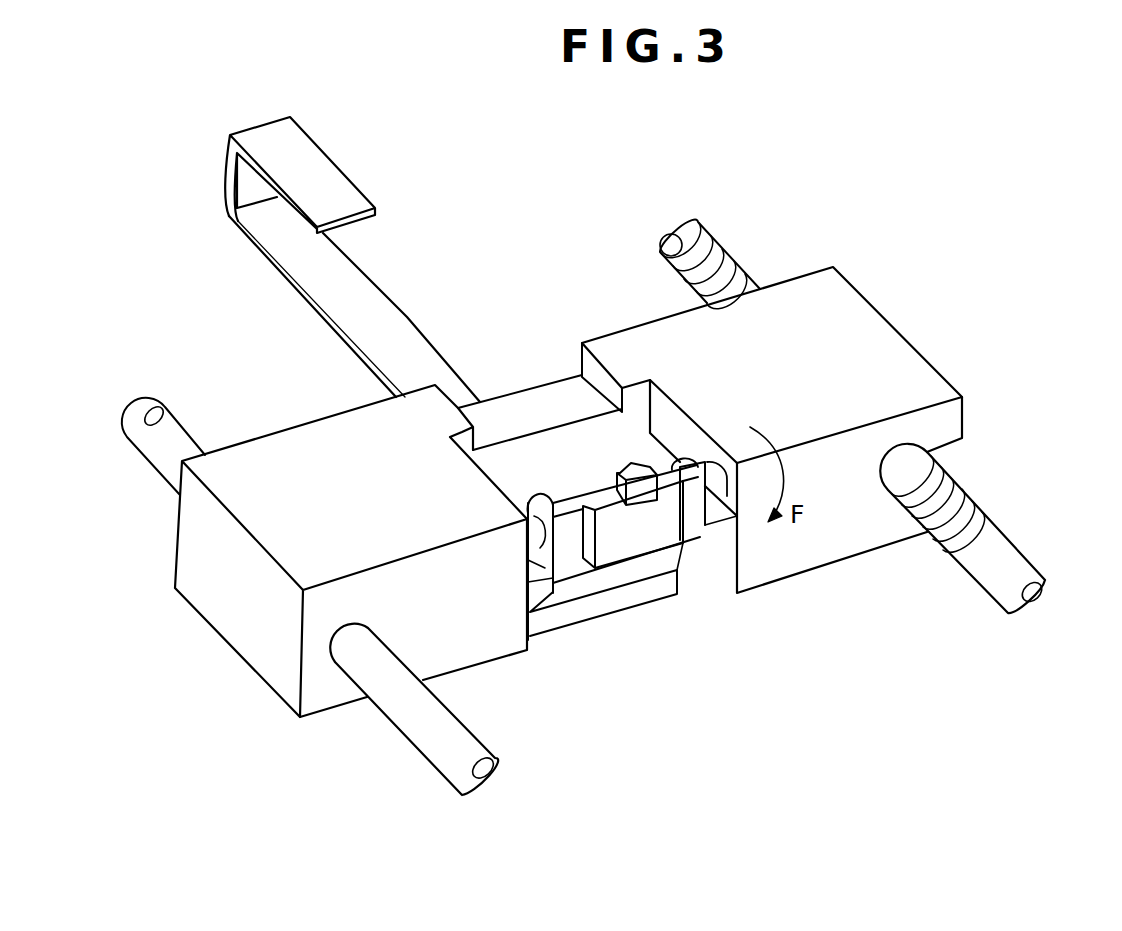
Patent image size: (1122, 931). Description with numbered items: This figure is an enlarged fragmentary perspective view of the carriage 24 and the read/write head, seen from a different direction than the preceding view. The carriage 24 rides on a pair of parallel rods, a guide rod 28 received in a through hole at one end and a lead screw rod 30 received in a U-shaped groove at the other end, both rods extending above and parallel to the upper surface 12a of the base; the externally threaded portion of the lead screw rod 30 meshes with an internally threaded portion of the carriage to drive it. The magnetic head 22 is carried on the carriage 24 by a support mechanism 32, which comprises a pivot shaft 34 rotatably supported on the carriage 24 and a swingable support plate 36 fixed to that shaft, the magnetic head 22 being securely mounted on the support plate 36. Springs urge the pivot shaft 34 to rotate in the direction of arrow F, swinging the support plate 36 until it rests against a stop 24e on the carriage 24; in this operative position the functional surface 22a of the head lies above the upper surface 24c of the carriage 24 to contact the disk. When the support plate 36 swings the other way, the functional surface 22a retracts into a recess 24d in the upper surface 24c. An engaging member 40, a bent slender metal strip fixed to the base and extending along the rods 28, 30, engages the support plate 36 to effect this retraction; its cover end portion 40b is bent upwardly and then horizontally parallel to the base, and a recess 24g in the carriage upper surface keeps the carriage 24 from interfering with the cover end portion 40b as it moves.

The upper surface of the base 12a is at (700, 563).
The magnetic head 22 is at (602, 550).
The functional surface 22a is at (622, 470).
The carriage 24 is at (497, 656).
The upper surface of the carriage 24c is at (885, 378).
The recess 24d is at (567, 478).
The stop 24e is at (717, 540).
The recess in upper surface of carriage 24g is at (576, 352).
The guide rod 28 is at (440, 770).
The lead screw rod 30 is at (1020, 560).
The support mechanism 32 is at (630, 640).
The pivot shaft 34 is at (528, 533).
The support plate 36 is at (543, 586).
The engaging member 40 is at (400, 298).
The cover end portion 40b is at (350, 195).